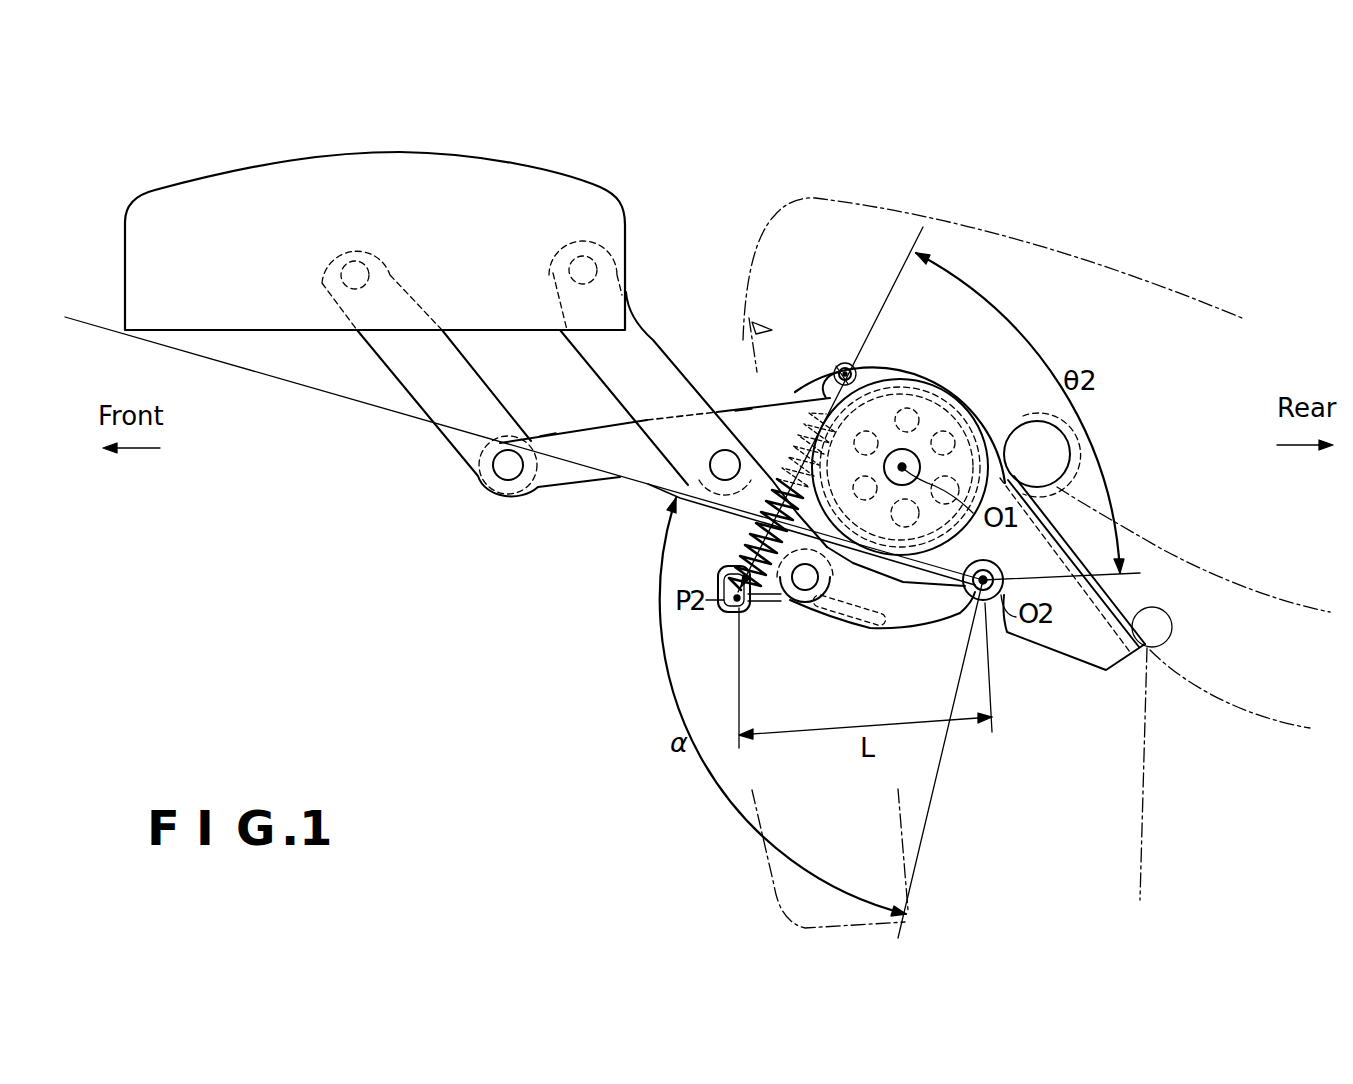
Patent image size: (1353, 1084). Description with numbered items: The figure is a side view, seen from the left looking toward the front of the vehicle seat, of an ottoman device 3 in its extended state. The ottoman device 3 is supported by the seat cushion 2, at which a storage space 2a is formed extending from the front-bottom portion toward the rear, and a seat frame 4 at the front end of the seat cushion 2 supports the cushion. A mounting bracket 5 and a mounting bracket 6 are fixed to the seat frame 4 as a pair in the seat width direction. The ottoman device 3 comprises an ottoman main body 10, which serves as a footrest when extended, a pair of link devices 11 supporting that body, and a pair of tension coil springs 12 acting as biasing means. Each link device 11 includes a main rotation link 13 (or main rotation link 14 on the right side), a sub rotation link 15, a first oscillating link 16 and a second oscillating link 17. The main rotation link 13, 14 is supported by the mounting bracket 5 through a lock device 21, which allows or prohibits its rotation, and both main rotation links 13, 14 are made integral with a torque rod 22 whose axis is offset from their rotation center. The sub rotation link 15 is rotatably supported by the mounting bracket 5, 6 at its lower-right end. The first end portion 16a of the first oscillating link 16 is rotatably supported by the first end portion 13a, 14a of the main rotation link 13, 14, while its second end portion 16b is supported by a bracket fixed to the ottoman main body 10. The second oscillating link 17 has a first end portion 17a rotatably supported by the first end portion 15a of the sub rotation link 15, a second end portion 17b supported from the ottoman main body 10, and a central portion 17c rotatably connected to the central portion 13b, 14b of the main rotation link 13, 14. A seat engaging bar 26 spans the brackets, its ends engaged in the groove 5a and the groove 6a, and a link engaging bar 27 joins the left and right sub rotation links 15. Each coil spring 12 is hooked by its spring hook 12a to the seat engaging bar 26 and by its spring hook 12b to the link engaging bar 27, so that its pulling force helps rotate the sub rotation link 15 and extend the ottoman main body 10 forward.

The seat cushion 2 is at (1050, 248).
The storage space 2a is at (737, 327).
The ottoman device 3 is at (688, 232).
The seat frame 4 is at (1115, 503).
The mounting bracket 5 is at (992, 484).
The mounting bracket 6 is at (992, 462).
The groove 5a is at (836, 319).
The groove 6a is at (842, 375).
The ottoman main body 10 is at (460, 152).
The link device 11 is at (665, 451).
The tension coil spring 12 is at (811, 447).
The spring hook 12a is at (832, 368).
The spring hook 12b is at (733, 566).
The main rotation link 13 is at (665, 451).
The main rotation link 14 is at (665, 409).
The first end portion 13a is at (546, 395).
The first end portion 14a is at (548, 434).
The central portion 13b is at (724, 371).
The central portion 14b is at (743, 410).
The sub rotation link 15 is at (882, 615).
The first end portion 15a is at (832, 618).
The first oscillating link 16 is at (430, 346).
The first end portion 16a is at (470, 460).
The second end portion 16b is at (403, 280).
The second oscillating link 17 is at (661, 424).
The first end portion 17a is at (780, 592).
The second end portion 17b is at (557, 252).
The central portion 17c is at (682, 468).
The lock device 21 is at (958, 368).
The torque rod 22 is at (984, 566).
The seat engaging bar 26 is at (879, 385).
The link engaging bar 27 is at (794, 608).